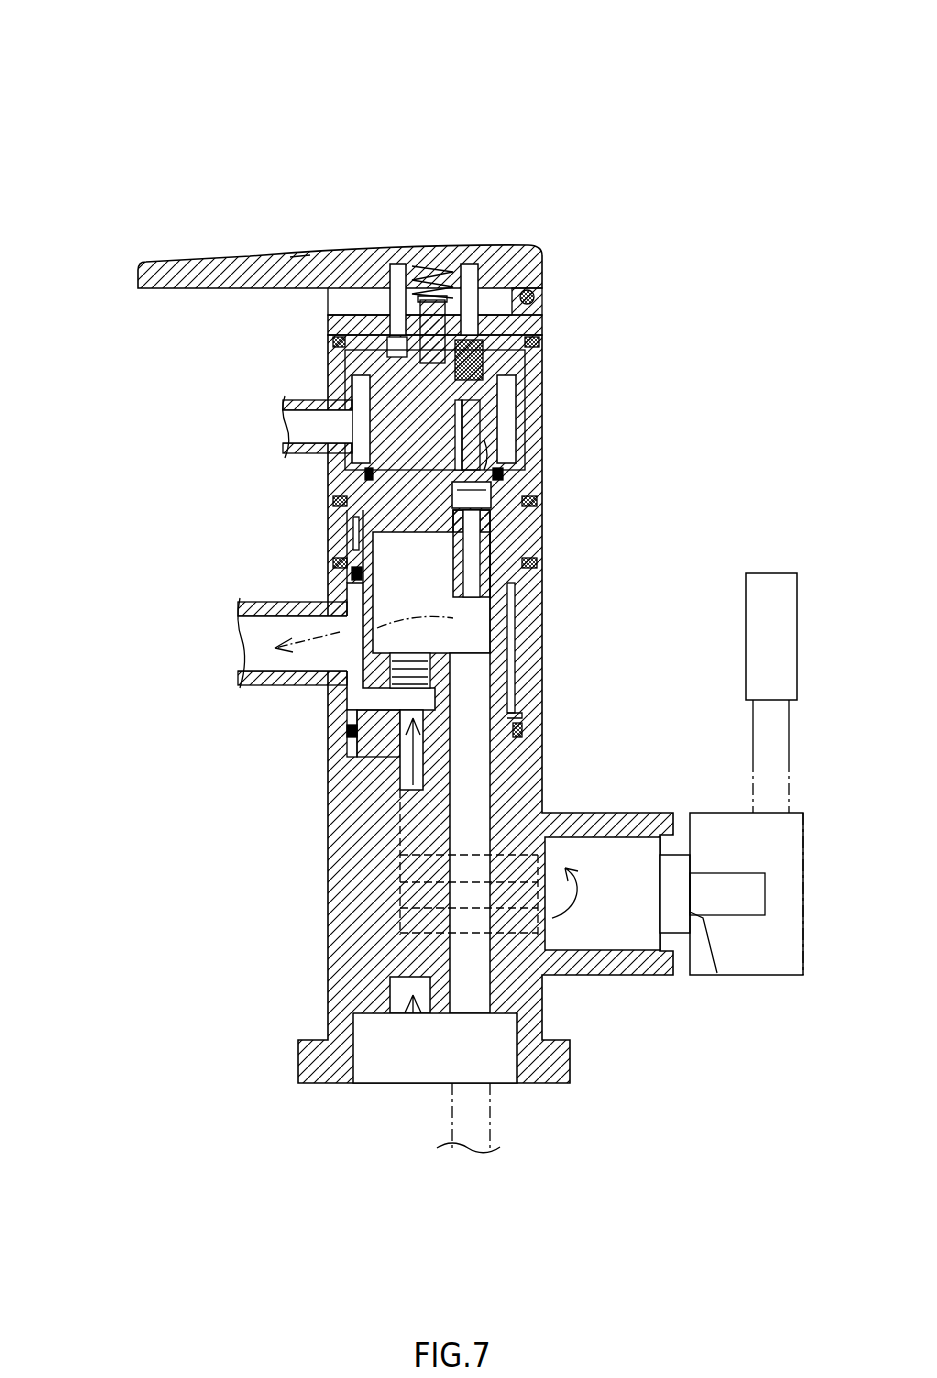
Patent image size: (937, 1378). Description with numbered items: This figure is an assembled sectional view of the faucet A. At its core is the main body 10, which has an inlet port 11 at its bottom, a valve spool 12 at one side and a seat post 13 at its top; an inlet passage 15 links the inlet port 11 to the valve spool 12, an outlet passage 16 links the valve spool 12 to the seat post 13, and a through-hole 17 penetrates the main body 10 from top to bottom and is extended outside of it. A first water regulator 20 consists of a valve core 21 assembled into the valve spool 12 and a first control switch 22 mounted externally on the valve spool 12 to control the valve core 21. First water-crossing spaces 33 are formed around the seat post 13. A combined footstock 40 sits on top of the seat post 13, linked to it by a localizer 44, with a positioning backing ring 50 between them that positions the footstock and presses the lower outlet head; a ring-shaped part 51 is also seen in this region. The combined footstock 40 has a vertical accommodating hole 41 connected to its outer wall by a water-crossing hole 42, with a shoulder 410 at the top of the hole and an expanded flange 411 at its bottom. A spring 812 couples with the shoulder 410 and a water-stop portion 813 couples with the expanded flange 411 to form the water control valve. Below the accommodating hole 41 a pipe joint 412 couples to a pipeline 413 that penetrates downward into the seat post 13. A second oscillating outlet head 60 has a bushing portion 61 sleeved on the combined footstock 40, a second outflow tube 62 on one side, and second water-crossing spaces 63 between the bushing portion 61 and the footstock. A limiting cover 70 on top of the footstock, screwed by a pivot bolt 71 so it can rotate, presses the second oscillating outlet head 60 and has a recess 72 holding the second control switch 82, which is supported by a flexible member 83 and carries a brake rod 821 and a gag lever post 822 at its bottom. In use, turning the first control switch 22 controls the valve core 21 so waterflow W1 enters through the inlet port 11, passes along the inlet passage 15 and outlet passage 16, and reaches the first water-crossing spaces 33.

The faucet A is at (121, 100).
The main body 10 is at (327, 845).
The inlet port 11 is at (383, 1068).
The valve spool 12 is at (573, 845).
The seat post 13 is at (530, 610).
The inlet passage 15 is at (408, 958).
The outlet passage 16 is at (360, 760).
The through-hole 17 is at (475, 968).
The first water regulator 20 is at (712, 774).
The valve core 21 is at (622, 850).
The first control switch 22 is at (680, 700).
The first water-crossing spaces 33 is at (512, 657).
The combined footstock 40 is at (346, 398).
The accommodating hole 41 is at (504, 431).
The water-crossing hole 42 is at (486, 460).
The localizer 44 is at (355, 515).
The positioning backing ring 50 is at (352, 543).
The seal 51 is at (345, 503).
The second oscillating outlet head 60 is at (244, 435).
The bushing portion 61 is at (328, 466).
The second outflow tube 62 is at (283, 405).
The second water-crossing spaces 63 is at (352, 388).
The limiting cover 70 is at (541, 322).
The pivot bolt 71 is at (457, 258).
The recess 72 is at (302, 256).
The second control switch 82 is at (236, 250).
The flexible member 83 is at (400, 265).
The shoulder 410 is at (541, 362).
The expanded flange 411 is at (480, 490).
The pipe joint 412 is at (448, 570).
The pipeline 413 is at (237, 662).
The spring 812 is at (541, 333).
The water-stop portion 813 is at (472, 512).
The brake rod 821 is at (477, 268).
The gag lever post 822 is at (333, 312).
The waterflow W1 is at (345, 742).